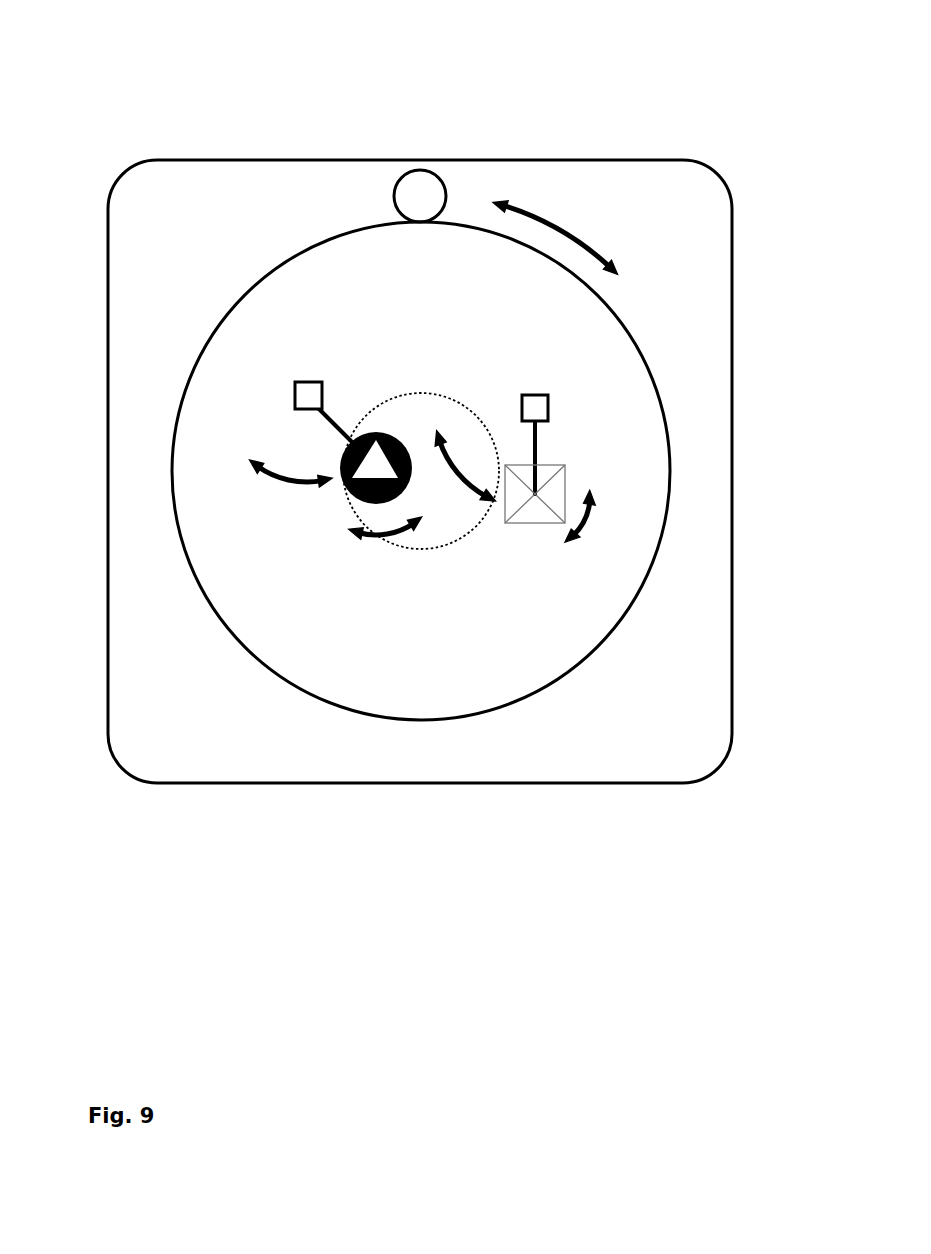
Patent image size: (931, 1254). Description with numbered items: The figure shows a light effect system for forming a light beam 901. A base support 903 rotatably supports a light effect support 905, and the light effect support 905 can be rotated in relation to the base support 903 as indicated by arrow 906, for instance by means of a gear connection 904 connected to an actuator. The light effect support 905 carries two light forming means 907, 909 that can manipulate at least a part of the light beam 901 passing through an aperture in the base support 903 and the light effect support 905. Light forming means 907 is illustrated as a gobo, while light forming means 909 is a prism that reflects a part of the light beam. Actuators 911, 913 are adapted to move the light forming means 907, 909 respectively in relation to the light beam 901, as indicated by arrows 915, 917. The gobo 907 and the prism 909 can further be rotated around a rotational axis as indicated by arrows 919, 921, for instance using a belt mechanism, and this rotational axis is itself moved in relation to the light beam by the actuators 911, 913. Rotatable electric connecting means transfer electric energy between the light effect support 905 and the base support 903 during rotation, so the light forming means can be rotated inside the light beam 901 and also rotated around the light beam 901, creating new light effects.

The light beam 901 is at (423, 392).
The base support 903 is at (225, 160).
The gear connection 904 is at (418, 205).
The light effect support 905 is at (357, 712).
The arrow 906 is at (598, 255).
The light forming means 907 is at (375, 466).
The light forming means 909 is at (535, 496).
The actuator 911 is at (298, 383).
The actuator 913 is at (548, 395).
The arrow 915 is at (297, 477).
The arrow 917 is at (455, 470).
The arrow 919 is at (366, 527).
The arrow 921 is at (597, 500).